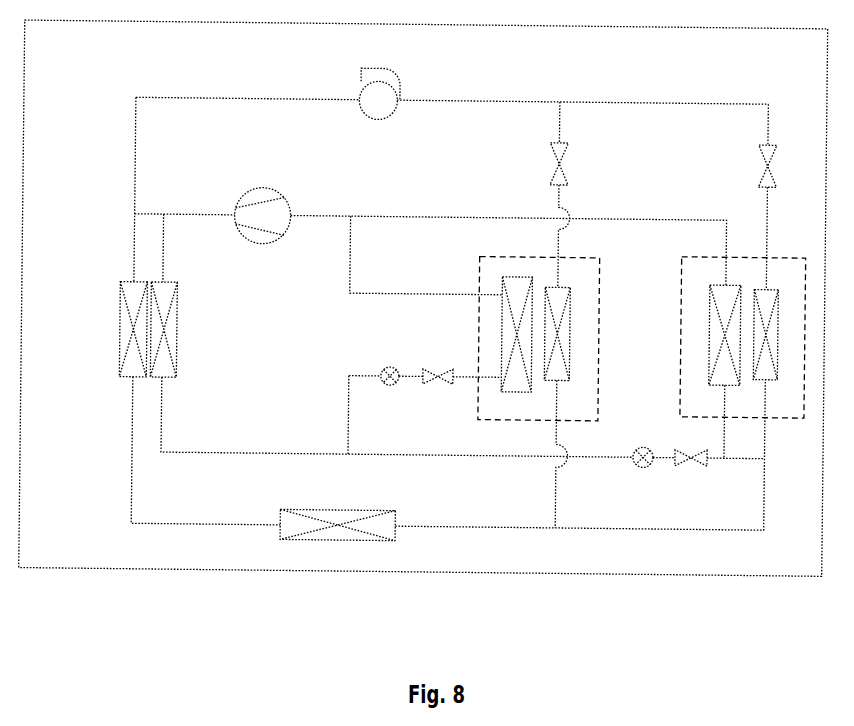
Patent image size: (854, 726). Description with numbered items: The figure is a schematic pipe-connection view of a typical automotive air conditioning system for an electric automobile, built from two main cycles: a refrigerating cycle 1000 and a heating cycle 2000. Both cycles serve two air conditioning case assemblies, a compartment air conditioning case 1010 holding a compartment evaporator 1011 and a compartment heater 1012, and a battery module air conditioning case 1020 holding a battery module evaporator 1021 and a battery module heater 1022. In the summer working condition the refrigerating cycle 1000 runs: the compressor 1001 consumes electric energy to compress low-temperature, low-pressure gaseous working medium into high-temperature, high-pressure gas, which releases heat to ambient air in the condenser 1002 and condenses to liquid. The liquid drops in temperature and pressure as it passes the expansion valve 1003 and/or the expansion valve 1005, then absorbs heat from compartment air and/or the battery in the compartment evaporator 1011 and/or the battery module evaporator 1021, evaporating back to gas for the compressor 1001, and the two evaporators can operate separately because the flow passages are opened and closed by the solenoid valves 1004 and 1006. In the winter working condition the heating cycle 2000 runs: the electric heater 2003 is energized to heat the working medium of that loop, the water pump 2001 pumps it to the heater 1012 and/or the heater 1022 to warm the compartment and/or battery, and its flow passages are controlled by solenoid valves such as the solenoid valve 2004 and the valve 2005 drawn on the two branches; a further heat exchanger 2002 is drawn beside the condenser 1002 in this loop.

The refrigerating cycle 1000 is at (449, 318).
The compressor 1001 is at (262, 208).
The condenser 1002 is at (182, 330).
The expansion valve 1003 is at (387, 365).
The solenoid valve 1004 is at (436, 365).
The expansion valve 1005 is at (642, 448).
The solenoid valve 1006 is at (690, 448).
The compartment air conditioning case 1010 is at (538, 329).
The compartment evaporator 1011 is at (514, 324).
The compartment heater 1012 is at (568, 319).
The battery module air conditioning case 1020 is at (733, 327).
The battery module evaporator 1021 is at (713, 321).
The battery module heater 1022 is at (778, 319).
The heating cycle 2000 is at (449, 297).
The water pump 2001 is at (379, 85).
The heat exchanger 2002 is at (114, 329).
The electric heater 2003 is at (338, 538).
The solenoid valve 2004 is at (579, 164).
The valve 2005 is at (784, 166).